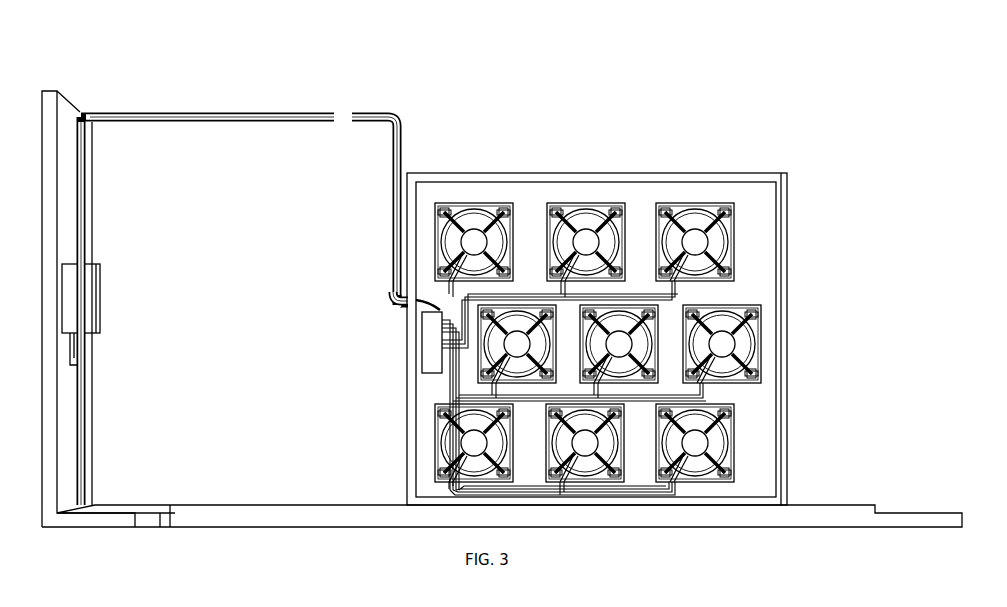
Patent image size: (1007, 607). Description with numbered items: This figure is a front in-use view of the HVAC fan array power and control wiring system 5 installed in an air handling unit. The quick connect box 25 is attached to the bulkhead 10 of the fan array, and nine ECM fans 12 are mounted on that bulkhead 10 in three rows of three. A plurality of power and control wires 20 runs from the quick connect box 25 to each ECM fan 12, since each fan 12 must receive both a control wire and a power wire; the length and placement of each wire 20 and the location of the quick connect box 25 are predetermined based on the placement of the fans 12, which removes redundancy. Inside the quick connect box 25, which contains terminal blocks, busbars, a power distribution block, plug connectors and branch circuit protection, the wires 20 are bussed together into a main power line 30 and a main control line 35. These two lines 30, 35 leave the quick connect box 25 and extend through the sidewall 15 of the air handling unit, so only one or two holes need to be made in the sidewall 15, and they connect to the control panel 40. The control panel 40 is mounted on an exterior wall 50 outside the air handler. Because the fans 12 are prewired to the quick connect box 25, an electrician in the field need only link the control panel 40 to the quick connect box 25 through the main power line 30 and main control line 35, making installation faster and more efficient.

The fan array wiring system 5 is at (150, 44).
The bulkhead of fan array 10 is at (648, 193).
The ECM fan 12 is at (476, 236).
The sidewall of air handling unit 15 is at (790, 219).
The plurality of wires 20 is at (690, 284).
The quick connect box 25 is at (428, 345).
The main power line 30 is at (397, 143).
The main control line 35 is at (388, 190).
The control panel 40 is at (85, 291).
The exterior wall 50 is at (82, 413).